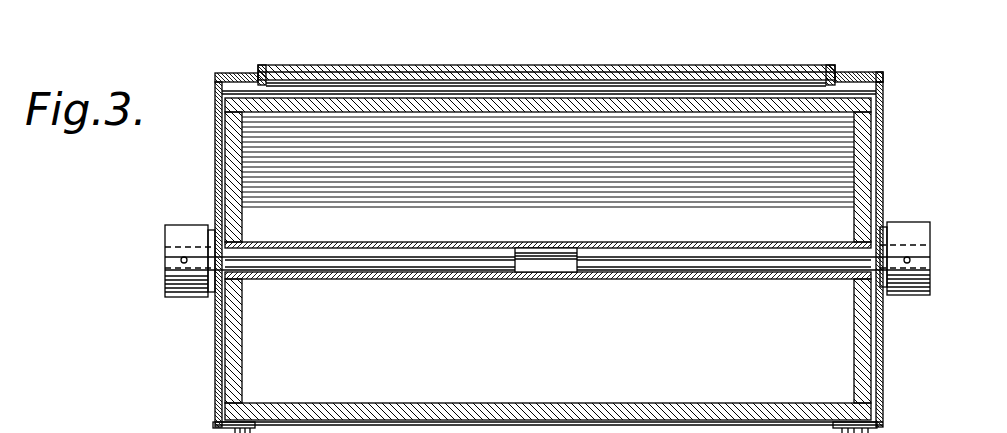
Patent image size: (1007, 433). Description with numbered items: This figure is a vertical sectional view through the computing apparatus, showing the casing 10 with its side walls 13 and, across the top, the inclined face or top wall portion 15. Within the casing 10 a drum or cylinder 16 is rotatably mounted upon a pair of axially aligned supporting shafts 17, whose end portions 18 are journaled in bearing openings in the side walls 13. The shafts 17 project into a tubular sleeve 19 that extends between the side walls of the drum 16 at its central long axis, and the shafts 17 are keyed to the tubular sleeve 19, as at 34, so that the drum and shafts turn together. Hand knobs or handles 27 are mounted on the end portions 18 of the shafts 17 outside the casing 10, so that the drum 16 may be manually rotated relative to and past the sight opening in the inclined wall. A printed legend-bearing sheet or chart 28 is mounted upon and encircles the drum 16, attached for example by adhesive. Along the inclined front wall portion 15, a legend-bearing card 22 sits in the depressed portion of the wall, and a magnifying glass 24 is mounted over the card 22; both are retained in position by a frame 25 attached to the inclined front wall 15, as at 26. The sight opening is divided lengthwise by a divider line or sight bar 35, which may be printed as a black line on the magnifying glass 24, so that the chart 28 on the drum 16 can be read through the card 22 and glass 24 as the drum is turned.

The casing 10 is at (884, 360).
The side walls 13 is at (215, 183).
The inclined face or top wall portion 15 is at (860, 71).
The drum or cylinder 16 is at (853, 323).
The shafts 17 is at (386, 262).
The end portions of the shaft 18 is at (208, 263).
The tubular sleeve 19 is at (653, 241).
The legend-bearing card 22 is at (590, 80).
The magnifying glass 24 is at (523, 82).
The frame 25 is at (831, 65).
The attachment of frame to inclined front wall 26 is at (222, 73).
The hand knobs or handles 27 is at (167, 232).
The printed legend-bearing sheet or chart 28 is at (677, 98).
The keying of shafts to tubular sleeve 34 is at (242, 233).
The divider line or sight bar 35 is at (884, 89).